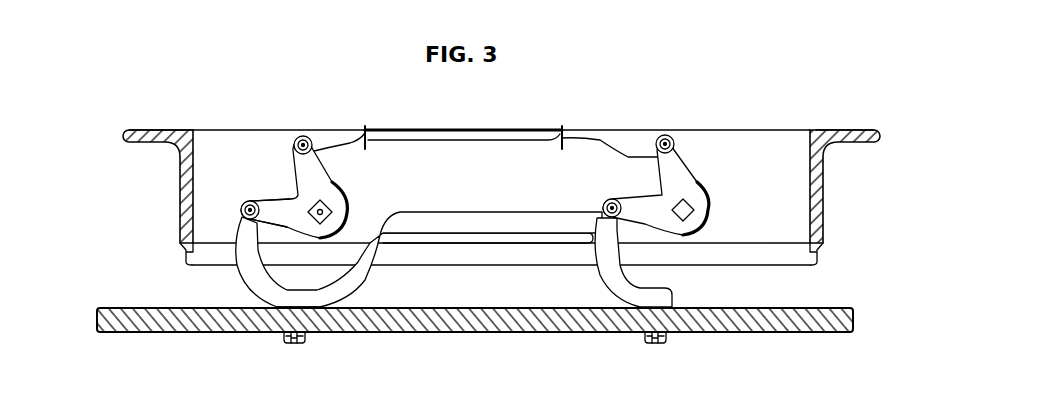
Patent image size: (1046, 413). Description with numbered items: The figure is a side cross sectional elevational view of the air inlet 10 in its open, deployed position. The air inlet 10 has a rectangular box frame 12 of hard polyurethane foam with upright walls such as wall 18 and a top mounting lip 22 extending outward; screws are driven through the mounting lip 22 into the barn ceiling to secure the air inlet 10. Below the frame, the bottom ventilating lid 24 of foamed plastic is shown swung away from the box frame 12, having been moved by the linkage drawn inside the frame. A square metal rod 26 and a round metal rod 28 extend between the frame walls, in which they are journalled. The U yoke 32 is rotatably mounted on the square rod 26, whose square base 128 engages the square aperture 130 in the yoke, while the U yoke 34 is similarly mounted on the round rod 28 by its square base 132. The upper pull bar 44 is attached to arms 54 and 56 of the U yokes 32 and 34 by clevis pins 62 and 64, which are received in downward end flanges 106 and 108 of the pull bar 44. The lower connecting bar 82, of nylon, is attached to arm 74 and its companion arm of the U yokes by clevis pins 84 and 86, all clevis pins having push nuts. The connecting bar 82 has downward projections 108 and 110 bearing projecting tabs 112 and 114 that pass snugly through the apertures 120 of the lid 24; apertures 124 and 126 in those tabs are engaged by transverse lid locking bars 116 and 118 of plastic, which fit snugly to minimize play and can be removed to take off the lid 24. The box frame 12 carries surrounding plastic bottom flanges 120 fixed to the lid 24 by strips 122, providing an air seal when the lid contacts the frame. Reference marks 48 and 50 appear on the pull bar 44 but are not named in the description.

The air inlet 10 is at (557, 181).
The rectangular box frame 12 is at (865, 186).
The upright wall 18 is at (148, 186).
The top mounting lip 22 is at (515, 102).
The bottom ventilating lid 24 is at (475, 340).
The square metal rod 26 is at (720, 197).
The round metal rod 28 is at (344, 197).
The U yoke 32 is at (731, 208).
The U yoke 34 is at (360, 210).
The upper pull bar 44 is at (463, 123).
The left stop 48 is at (392, 123).
The right stop 50 is at (538, 125).
The arm of U yoke 54 is at (684, 189).
The arm of U yoke 56 is at (291, 188).
The clevis pin 62 is at (704, 141).
The clevis pin 64 is at (273, 141).
The arm of U yoke 74 is at (266, 199).
The lower connecting bar 82 is at (391, 242).
The clevis pin 84 is at (582, 195).
The clevis pin 86 is at (229, 199).
The downward end flange 106 is at (526, 124).
The downward end flange / downward projection 108 is at (451, 201).
The downward projection 110 is at (363, 292).
The projecting tab 112 is at (697, 345).
The projecting tab 114 is at (329, 353).
The lid locking bar 116 is at (681, 354).
The lid locking bar 118 is at (324, 365).
The bottom flange / aperture 120 is at (512, 250).
The strip 122 is at (512, 274).
The aperture in tab 124 is at (628, 361).
The aperture in tab 126 is at (262, 357).
The square base 128 is at (748, 247).
The square aperture 130 is at (512, 249).
The square base 132 is at (485, 260).